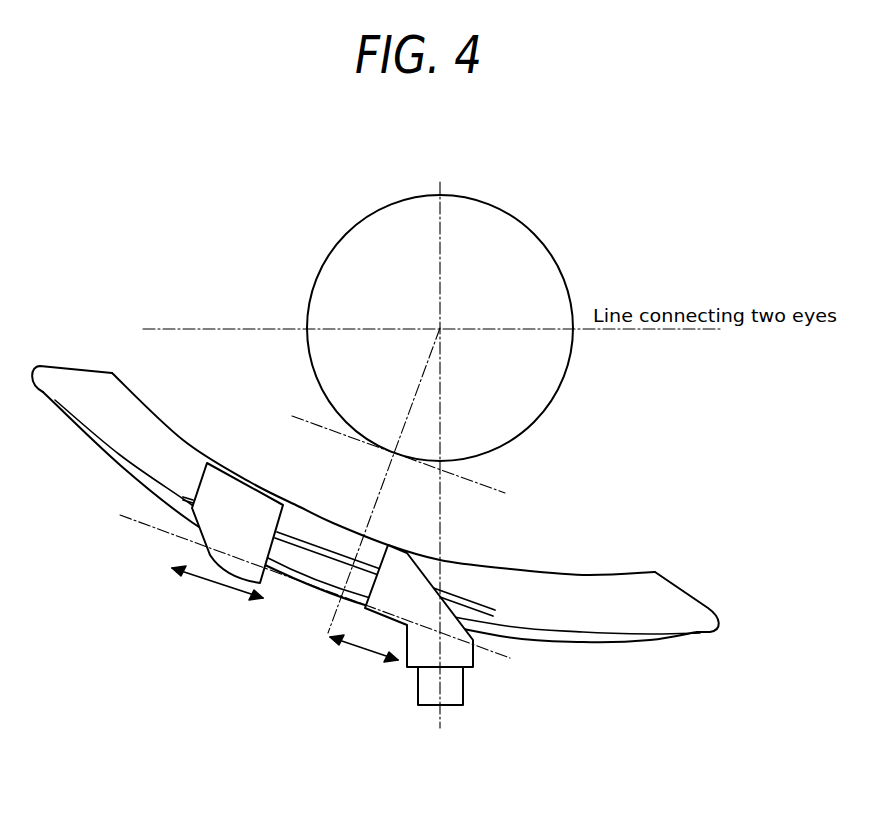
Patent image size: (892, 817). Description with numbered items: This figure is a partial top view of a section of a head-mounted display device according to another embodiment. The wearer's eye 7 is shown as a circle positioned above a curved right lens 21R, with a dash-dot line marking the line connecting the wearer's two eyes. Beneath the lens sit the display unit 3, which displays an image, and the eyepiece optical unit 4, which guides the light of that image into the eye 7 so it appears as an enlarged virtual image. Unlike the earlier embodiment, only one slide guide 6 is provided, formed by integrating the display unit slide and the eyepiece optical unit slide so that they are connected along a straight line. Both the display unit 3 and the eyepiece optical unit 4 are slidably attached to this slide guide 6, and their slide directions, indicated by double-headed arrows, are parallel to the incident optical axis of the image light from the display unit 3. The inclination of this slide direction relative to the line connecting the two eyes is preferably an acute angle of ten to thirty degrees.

The display unit 3 is at (245, 498).
The eyepiece optical unit 4 is at (462, 658).
The slide guide 6 is at (323, 547).
The eye 7 is at (528, 227).
The right lens (21RU) 21R is at (593, 597).